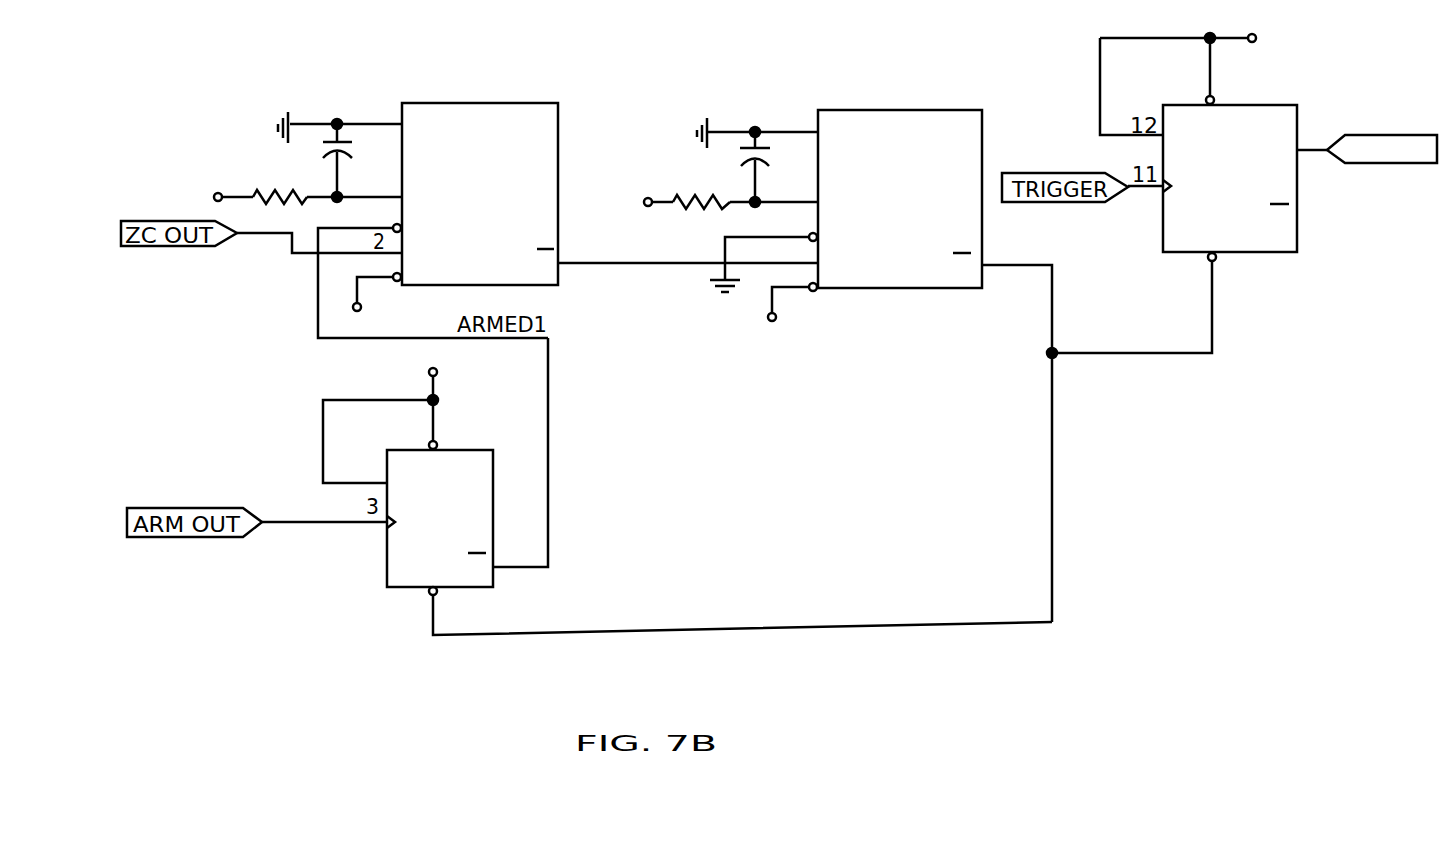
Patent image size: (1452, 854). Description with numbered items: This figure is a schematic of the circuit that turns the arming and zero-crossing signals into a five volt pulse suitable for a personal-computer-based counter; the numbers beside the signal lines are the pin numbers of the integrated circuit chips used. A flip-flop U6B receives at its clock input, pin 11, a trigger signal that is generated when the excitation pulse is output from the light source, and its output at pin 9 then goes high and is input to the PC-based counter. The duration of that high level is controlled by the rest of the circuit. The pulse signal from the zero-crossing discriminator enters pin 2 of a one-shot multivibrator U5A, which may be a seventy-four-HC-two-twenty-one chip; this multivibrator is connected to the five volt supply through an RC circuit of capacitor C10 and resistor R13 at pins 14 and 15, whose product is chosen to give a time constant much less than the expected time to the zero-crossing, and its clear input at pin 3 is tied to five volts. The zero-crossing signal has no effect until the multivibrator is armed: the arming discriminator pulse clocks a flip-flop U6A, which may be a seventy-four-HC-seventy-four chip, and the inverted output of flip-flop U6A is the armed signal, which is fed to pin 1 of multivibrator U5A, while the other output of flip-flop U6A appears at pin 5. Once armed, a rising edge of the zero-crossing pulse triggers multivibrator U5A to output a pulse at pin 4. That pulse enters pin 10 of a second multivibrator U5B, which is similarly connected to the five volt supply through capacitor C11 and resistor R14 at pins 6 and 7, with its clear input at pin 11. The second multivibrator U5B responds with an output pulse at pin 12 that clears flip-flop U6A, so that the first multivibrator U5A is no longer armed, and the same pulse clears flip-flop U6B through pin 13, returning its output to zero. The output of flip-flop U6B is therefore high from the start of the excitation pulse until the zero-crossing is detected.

The one-shot multivibrator U5A is at (480, 183).
The second multivibrator U5B is at (900, 188).
The flip-flop U6A is at (463, 506).
The flip-flop U6B is at (1265, 170).
The capacitor C10 is at (311, 160).
The capacitor C11 is at (727, 167).
The resistor R13 is at (233, 209).
The resistor R14 is at (661, 215).
The pin 14 is at (340, 120).
The pin 15 is at (354, 185).
The pin 1 is at (433, 272).
The pin 3 is at (369, 296).
The pin 4 is at (688, 253).
The pin 6 is at (757, 126).
The pin 7 is at (774, 191).
The pin 9 is at (771, 239).
The pin 10 is at (757, 266).
The pin 11 is at (785, 308).
The pin 12 is at (1019, 431).
The pin 13 is at (1151, 303).
The pin 2 is at (378, 442).
The pin 5 is at (520, 452).